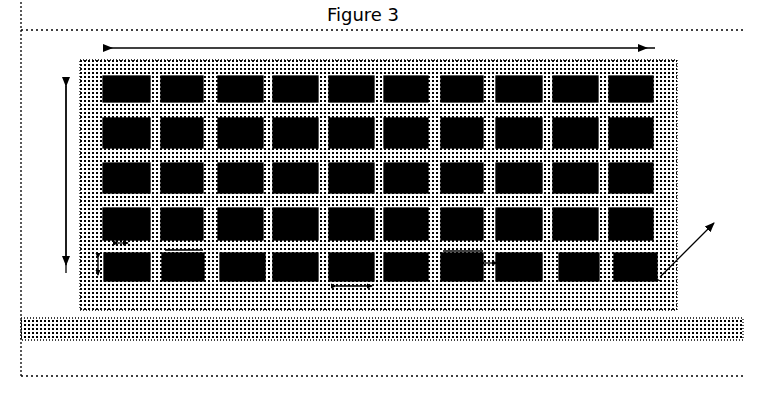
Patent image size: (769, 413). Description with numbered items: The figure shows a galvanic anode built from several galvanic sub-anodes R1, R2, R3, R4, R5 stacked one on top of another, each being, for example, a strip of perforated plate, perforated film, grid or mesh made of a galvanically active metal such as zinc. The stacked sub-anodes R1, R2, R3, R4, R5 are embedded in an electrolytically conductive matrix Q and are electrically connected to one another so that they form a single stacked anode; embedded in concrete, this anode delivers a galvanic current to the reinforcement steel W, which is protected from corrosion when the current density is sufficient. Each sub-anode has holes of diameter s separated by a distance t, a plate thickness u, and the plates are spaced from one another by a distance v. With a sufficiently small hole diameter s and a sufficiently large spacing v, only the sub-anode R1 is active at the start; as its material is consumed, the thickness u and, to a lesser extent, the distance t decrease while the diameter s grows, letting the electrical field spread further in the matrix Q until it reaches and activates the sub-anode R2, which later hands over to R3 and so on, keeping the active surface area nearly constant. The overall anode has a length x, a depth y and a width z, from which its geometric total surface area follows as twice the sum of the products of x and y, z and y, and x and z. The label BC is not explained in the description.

The length of the stacked anode x is at (379, 40).
The depth of the stacked anode y is at (687, 250).
The width of the stacked anode z is at (59, 175).
The bottom chip / base carrier BC is at (51, 175).
The first galvanic sub-anode R1 is at (380, 267).
The second galvanic sub-anode R2 is at (378, 224).
The third galvanic sub-anode R3 is at (378, 178).
The fourth galvanic sub-anode R4 is at (378, 133).
The fifth galvanic sub-anode R5 is at (378, 89).
The reinforcement steel W is at (382, 329).
The electrolytically conductive matrix Q is at (656, 291).
The hole diameter s is at (470, 269).
The distance between the holes t is at (354, 294).
The thickness of the sub-anode u is at (91, 266).
The distance between the perforated plates v is at (160, 246).